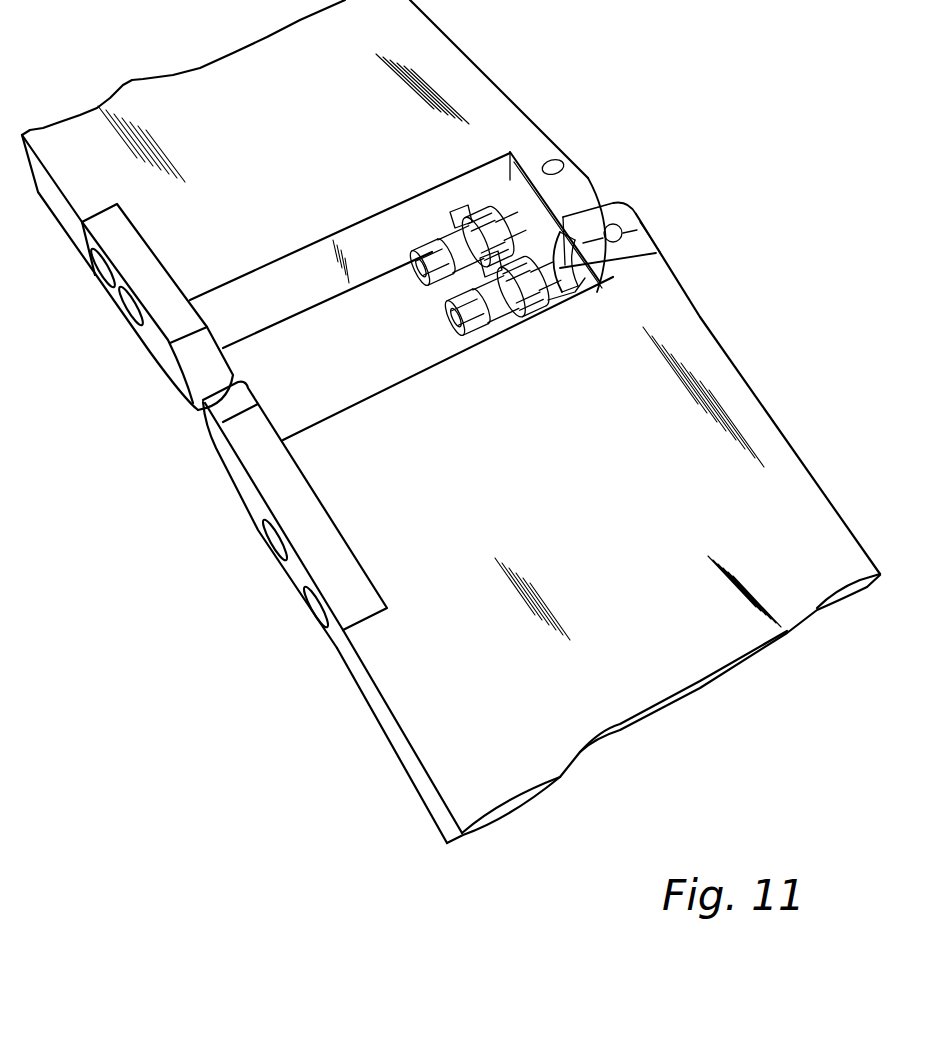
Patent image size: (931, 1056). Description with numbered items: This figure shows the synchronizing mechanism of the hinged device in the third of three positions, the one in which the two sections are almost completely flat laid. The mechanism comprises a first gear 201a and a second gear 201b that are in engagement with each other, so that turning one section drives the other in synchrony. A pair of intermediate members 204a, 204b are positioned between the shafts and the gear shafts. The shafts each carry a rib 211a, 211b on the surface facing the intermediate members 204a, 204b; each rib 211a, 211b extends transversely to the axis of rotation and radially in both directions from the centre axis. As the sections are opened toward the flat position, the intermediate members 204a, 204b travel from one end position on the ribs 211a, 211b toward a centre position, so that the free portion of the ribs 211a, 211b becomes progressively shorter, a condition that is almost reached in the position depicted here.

The first gear 201a is at (482, 203).
The second gear 201b is at (538, 312).
The intermediate member 204a is at (567, 217).
The intermediate member 204b is at (572, 287).
The rib 211a is at (525, 177).
The rib 211b is at (656, 253).